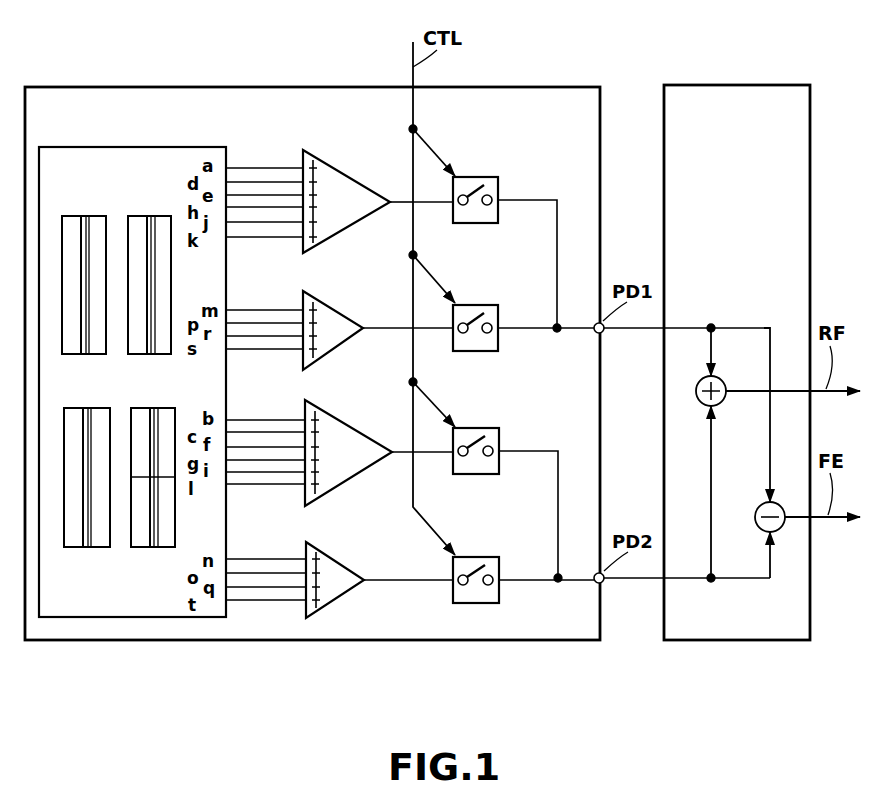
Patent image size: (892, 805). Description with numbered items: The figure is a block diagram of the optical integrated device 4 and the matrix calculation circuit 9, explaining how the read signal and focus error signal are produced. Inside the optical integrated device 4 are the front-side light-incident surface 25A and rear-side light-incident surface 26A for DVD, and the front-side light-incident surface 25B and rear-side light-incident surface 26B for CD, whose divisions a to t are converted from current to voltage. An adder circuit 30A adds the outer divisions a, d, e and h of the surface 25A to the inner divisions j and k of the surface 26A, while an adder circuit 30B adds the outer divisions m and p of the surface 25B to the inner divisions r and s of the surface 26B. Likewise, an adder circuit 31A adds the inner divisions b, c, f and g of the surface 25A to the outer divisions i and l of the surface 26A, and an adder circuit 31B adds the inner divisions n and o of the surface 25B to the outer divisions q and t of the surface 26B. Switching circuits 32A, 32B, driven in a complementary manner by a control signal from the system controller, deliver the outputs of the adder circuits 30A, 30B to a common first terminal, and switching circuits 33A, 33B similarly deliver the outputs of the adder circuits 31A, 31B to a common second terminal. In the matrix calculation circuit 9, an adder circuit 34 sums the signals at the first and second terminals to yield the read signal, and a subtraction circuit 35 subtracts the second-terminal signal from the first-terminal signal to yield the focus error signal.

The optical integrated device 4 is at (525, 87).
The matrix calculation circuit 9 is at (786, 85).
The front-side light-incident surface for DVD 25A is at (141, 406).
The front-side light-incident surface for CD 25B is at (76, 406).
The rear-side light-incident surface for DVD 26A is at (141, 214).
The rear-side light-incident surface for CD 26B is at (76, 214).
The adder circuit 30A is at (325, 163).
The adder circuit 30B is at (325, 304).
The adder circuit 31A is at (328, 413).
The adder circuit 31B is at (328, 554).
The switching circuit 32A is at (478, 177).
The switching circuit 32B is at (478, 305).
The switching circuit 33A is at (478, 428).
The switching circuit 33B is at (478, 557).
The adder circuit 34 is at (700, 405).
The subtraction circuit 35 is at (758, 508).